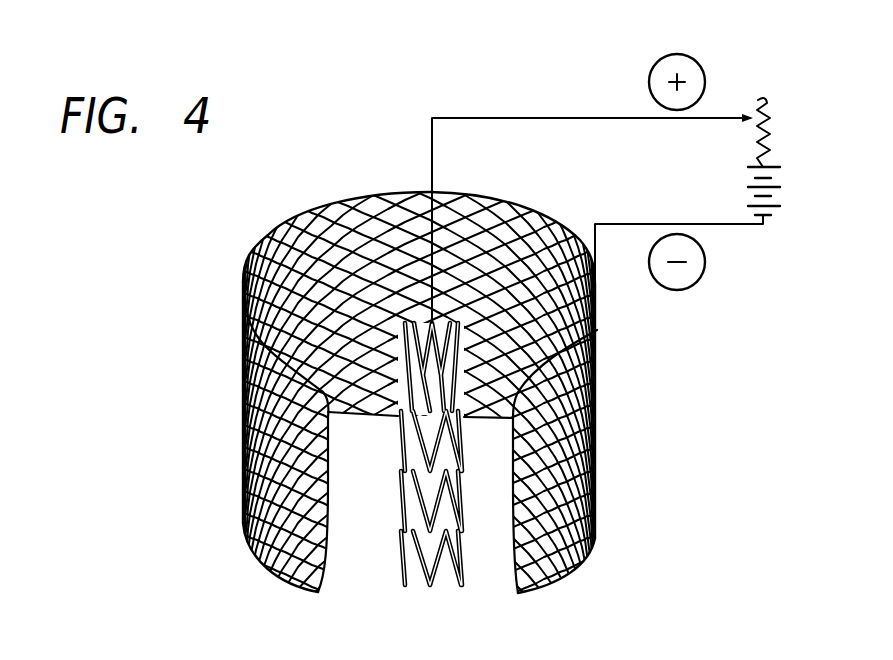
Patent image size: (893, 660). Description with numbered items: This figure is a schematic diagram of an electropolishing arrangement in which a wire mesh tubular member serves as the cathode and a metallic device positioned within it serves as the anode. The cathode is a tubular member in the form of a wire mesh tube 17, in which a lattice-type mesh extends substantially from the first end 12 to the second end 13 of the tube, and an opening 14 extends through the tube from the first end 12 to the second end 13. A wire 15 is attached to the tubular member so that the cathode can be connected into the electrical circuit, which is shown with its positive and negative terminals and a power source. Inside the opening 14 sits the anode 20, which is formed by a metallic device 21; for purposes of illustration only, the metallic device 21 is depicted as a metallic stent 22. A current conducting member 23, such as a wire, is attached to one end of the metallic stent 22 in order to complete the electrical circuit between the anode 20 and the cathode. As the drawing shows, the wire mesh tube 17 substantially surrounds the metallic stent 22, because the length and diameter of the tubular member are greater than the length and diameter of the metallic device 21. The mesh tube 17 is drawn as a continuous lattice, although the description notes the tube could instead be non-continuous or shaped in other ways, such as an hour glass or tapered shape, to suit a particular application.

The first end 12 is at (400, 194).
The second end 13 is at (295, 578).
The opening 14 is at (525, 240).
The wire 15 is at (622, 230).
The wire mesh tube 17 is at (242, 412).
The anode 20 is at (443, 316).
The metallic device 21 is at (403, 343).
The metallic stent 22 is at (383, 509).
The current conducting member 23 is at (533, 117).